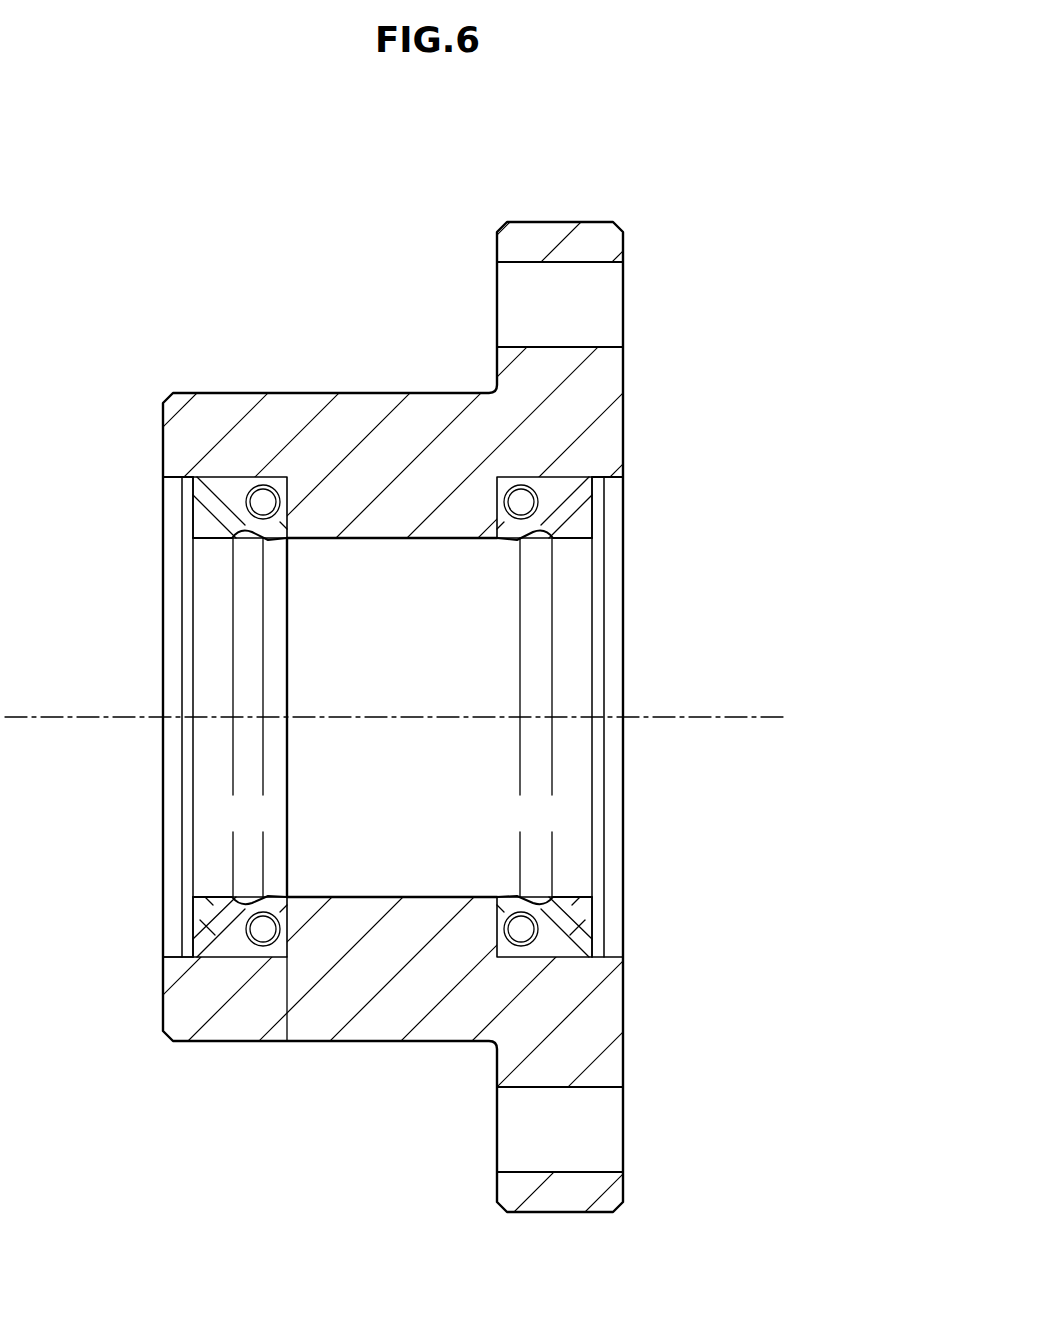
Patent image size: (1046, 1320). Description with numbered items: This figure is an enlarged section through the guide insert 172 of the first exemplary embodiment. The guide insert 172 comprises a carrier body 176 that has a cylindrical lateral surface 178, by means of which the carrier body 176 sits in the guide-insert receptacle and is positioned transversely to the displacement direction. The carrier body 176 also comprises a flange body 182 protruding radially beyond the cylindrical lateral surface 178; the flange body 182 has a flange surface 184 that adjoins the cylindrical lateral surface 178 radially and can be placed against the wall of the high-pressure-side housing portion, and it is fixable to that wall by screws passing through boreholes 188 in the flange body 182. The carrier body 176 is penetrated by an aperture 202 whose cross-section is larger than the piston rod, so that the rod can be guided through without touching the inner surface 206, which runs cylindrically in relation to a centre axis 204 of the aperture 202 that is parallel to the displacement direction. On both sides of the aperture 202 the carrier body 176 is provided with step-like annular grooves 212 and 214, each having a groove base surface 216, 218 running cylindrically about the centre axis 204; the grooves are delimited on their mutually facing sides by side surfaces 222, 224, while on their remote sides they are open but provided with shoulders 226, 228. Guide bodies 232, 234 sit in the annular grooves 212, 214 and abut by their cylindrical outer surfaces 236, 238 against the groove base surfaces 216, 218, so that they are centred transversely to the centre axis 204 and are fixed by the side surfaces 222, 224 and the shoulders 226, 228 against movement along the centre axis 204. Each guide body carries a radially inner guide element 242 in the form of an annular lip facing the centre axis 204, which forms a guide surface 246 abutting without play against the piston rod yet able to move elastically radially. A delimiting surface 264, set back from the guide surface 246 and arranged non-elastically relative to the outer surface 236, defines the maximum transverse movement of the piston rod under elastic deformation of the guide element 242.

The guide insert 172 is at (325, 288).
The carrier body 176 is at (392, 452).
The cylindrical lateral surface 178 is at (302, 1043).
The flange body 182 is at (590, 1193).
The flange surface 184 is at (494, 1185).
The boreholes 188 is at (595, 265).
The aperture 202 is at (448, 665).
The centre axis 204 is at (690, 720).
The inner surface 206 is at (381, 541).
The annular groove 212 is at (226, 939).
The annular groove 214 is at (552, 940).
The groove base surface 216 is at (207, 943).
The groove base surface 218 is at (573, 950).
The side surface 222 is at (265, 895).
The side surface 224 is at (518, 894).
The shoulder 226 is at (200, 958).
The shoulder 228 is at (590, 955).
The guide body 232 is at (195, 498).
The guide body 234 is at (597, 499).
The cylindrical outer surface 236 is at (233, 477).
The cylindrical outer surface 238 is at (573, 477).
The guide element 242 is at (278, 534).
The guide surface 246 is at (277, 893).
The delimiting surface 264 is at (215, 893).